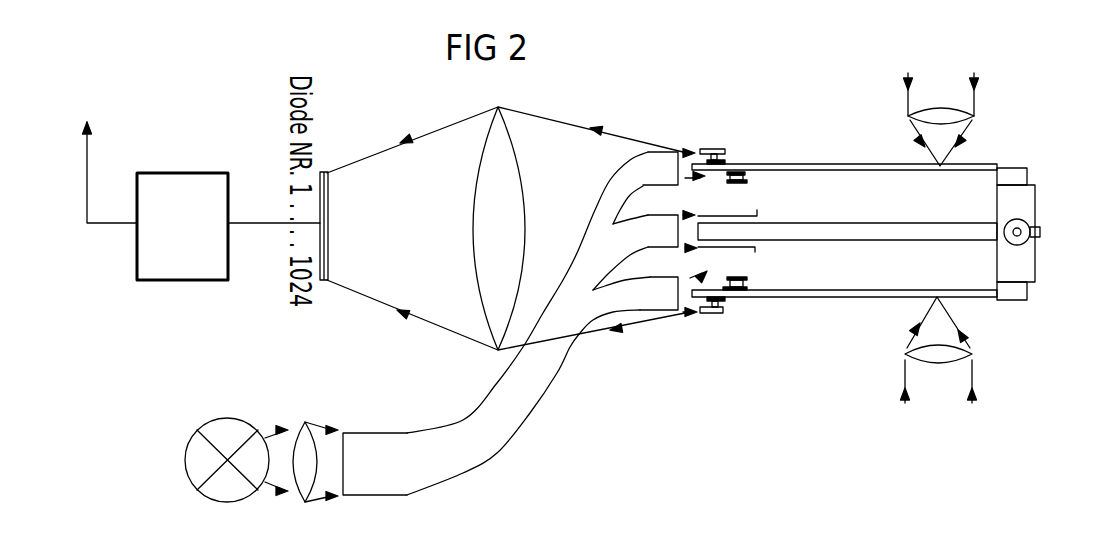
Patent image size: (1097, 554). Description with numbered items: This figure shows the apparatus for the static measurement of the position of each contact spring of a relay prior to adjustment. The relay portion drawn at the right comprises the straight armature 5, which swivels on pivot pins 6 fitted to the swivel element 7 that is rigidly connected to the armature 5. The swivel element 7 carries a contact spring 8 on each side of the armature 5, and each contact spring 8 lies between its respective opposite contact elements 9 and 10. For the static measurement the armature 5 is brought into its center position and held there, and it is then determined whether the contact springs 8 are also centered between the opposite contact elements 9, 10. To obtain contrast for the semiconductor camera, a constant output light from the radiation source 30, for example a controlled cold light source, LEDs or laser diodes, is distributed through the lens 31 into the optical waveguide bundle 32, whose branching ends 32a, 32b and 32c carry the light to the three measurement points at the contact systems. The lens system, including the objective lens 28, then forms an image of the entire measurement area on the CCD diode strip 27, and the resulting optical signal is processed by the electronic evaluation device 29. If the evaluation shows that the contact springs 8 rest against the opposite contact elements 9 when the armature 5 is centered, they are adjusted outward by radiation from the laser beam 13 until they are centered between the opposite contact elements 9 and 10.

The armature 5 is at (832, 233).
The pivot pins 6 is at (1041, 232).
The swivel element 7 is at (1027, 192).
The contact spring 8 is at (848, 312).
The opposite contact element 9 is at (762, 270).
The opposite contact element 10 is at (717, 313).
The laser beam 13 is at (972, 383).
The CCD diode strip 27 is at (323, 233).
The objective lens 28 is at (490, 193).
The electronic evaluation device 29 is at (198, 265).
The radiation source 30 is at (197, 455).
The lens 31 is at (307, 440).
The optical waveguide bundle 32 is at (498, 448).
The branching end 32a is at (667, 160).
The branching end 32b is at (670, 218).
The branching end 32c is at (663, 300).